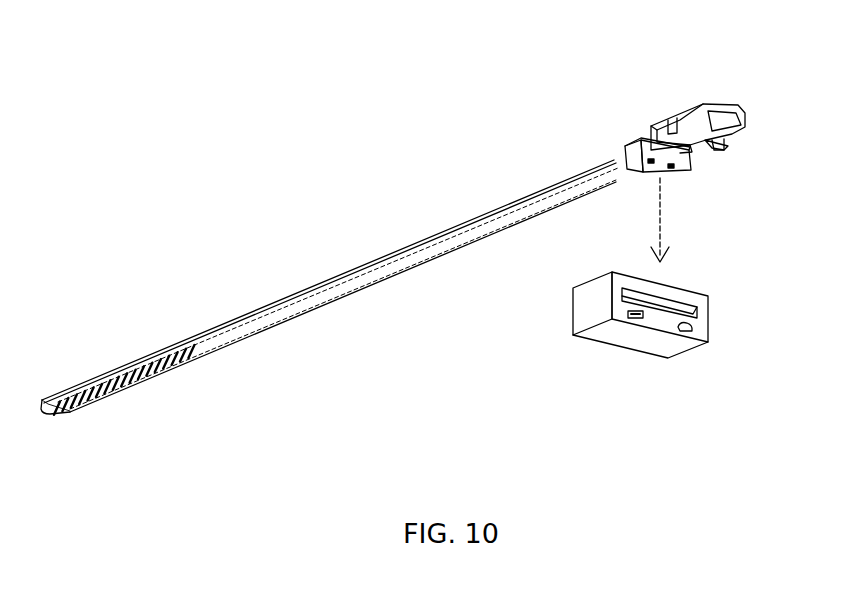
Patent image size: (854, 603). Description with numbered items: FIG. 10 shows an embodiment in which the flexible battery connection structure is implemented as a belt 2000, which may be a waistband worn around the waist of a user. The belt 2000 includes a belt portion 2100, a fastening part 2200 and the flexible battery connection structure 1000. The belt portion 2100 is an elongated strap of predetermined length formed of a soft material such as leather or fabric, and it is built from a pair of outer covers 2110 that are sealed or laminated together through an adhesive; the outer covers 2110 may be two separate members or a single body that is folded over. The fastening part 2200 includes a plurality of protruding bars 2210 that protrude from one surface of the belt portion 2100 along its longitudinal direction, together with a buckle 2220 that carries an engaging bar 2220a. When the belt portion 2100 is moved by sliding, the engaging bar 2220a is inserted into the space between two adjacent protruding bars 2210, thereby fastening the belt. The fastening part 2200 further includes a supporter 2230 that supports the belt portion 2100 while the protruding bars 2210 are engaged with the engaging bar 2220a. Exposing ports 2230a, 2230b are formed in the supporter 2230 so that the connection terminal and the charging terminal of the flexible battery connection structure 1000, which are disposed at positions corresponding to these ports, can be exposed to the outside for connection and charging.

The belt 2000 is at (363, 100).
The flexible battery connection structure 1000 is at (328, 318).
The belt portion 2100 is at (342, 266).
The outer covers 2110 is at (252, 303).
The protruding bars 2210 is at (167, 378).
The fastening part 2200 is at (671, 105).
The buckle 2220 is at (692, 108).
The engaging bar 2220a is at (718, 149).
The supporter 2230 is at (588, 308).
The exposing port 2230a is at (636, 320).
The exposing port 2230b is at (688, 330).